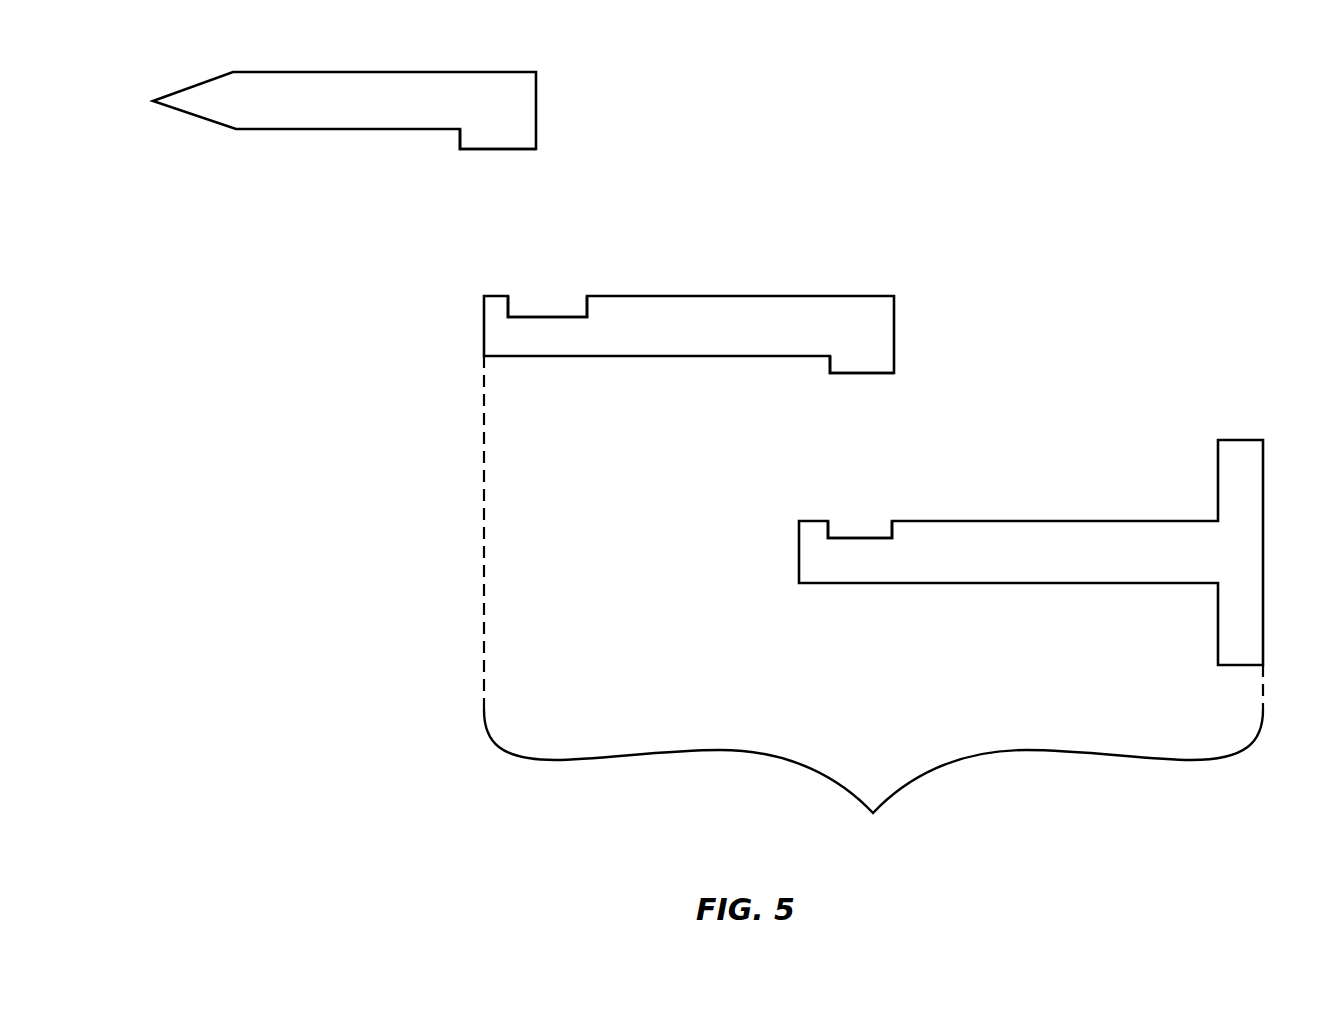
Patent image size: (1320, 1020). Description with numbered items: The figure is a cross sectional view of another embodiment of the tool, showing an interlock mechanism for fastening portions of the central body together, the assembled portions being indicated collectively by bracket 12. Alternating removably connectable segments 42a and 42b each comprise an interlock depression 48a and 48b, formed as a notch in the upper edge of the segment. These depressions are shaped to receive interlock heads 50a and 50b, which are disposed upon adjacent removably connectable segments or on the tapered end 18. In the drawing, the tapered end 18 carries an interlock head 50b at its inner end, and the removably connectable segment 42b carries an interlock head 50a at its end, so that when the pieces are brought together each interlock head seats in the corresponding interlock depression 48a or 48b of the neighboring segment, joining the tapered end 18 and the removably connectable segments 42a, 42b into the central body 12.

The connector assembly 12 is at (873, 602).
The tapered end 18 is at (205, 82).
The removably connectable segment 42a is at (1055, 520).
The removably connectable segment 42b is at (743, 294).
The interlock depression 48a is at (861, 537).
The interlock depression 48b is at (547, 316).
The interlock head 50a is at (862, 375).
The interlock head 50b is at (497, 151).